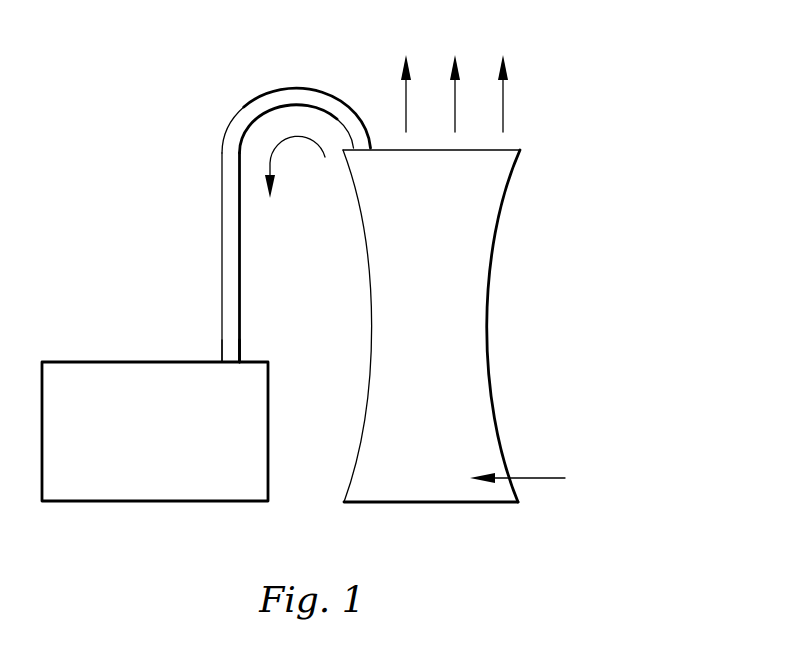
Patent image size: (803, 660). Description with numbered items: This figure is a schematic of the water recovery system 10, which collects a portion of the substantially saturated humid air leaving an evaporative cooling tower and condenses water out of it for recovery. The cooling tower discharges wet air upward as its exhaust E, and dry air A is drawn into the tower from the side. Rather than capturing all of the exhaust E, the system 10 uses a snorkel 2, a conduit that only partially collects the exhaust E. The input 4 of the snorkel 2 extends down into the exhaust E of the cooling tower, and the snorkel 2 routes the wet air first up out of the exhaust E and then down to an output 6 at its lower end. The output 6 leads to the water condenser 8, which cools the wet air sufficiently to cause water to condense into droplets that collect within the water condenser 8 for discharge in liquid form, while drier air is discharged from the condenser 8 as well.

The water recovery system 10 is at (110, 131).
The snorkel 2 is at (221, 218).
The input 4 is at (363, 139).
The output 6 is at (230, 350).
The water condenser 8 is at (67, 361).
The exhaust E is at (503, 110).
The dry air inlet A is at (533, 477).